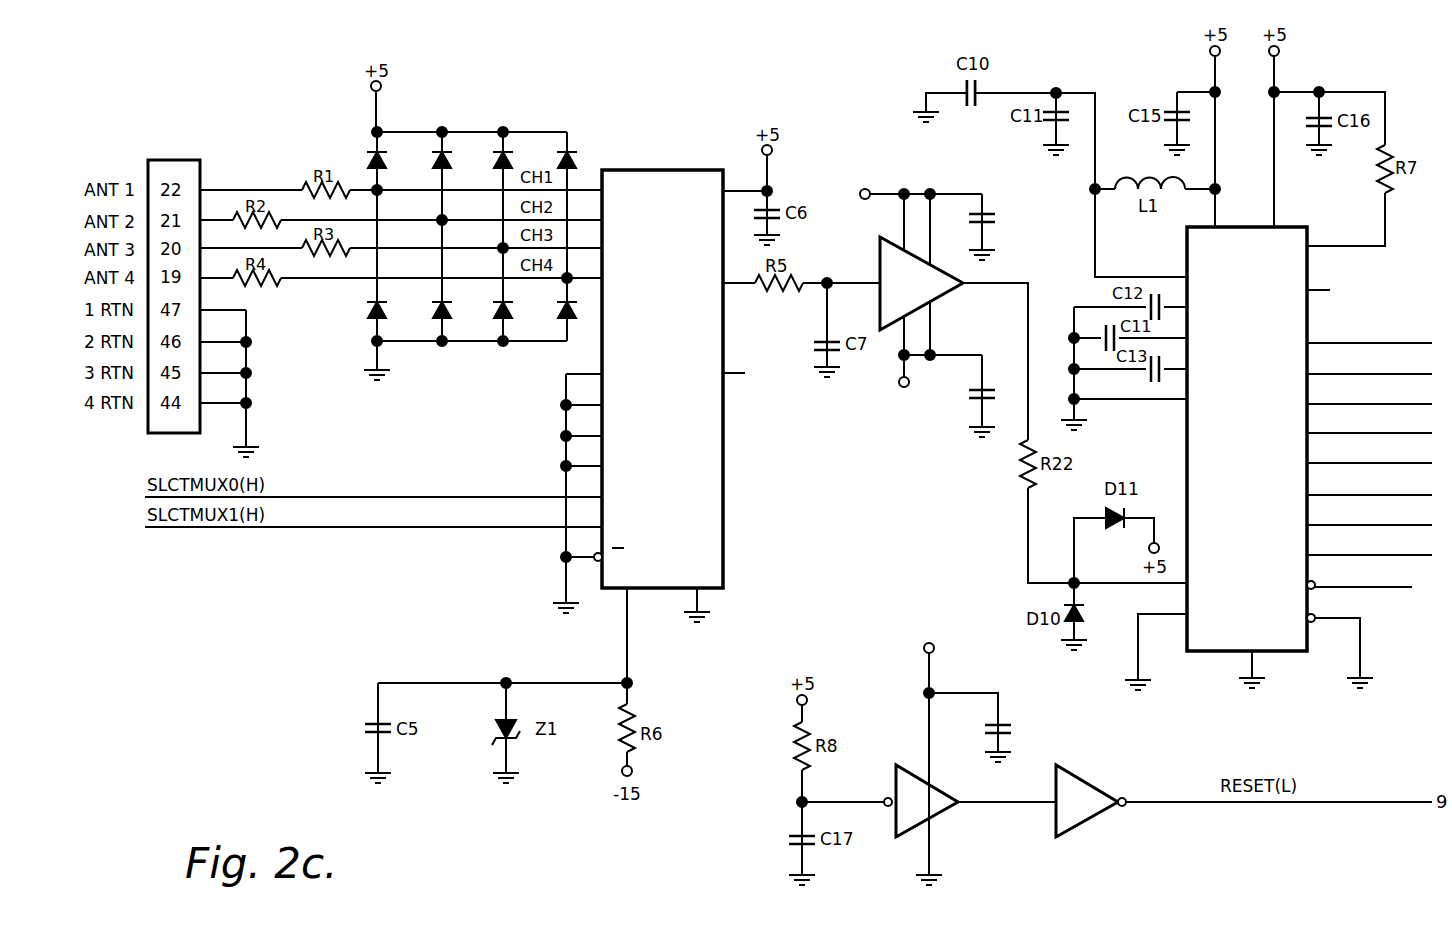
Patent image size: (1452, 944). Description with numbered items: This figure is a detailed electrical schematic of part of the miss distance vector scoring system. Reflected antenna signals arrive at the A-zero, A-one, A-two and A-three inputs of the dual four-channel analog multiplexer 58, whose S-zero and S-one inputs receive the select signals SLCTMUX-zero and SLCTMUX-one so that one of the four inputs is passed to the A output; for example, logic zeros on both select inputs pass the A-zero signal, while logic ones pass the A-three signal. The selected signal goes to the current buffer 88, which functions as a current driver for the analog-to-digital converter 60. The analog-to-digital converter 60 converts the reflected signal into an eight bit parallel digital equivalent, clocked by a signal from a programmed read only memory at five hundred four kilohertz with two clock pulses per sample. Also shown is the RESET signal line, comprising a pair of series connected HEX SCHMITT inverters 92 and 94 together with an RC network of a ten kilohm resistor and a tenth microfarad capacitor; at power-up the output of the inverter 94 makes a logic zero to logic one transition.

The dual 4-channel analog multiplexer 58 is at (650, 170).
The analog-to-digital converter 60 is at (1290, 227).
The current buffer 88 is at (940, 300).
The HEX SCHMITT inverter 92 is at (938, 813).
The HEX SCHMITT inverter 94 is at (1083, 813).